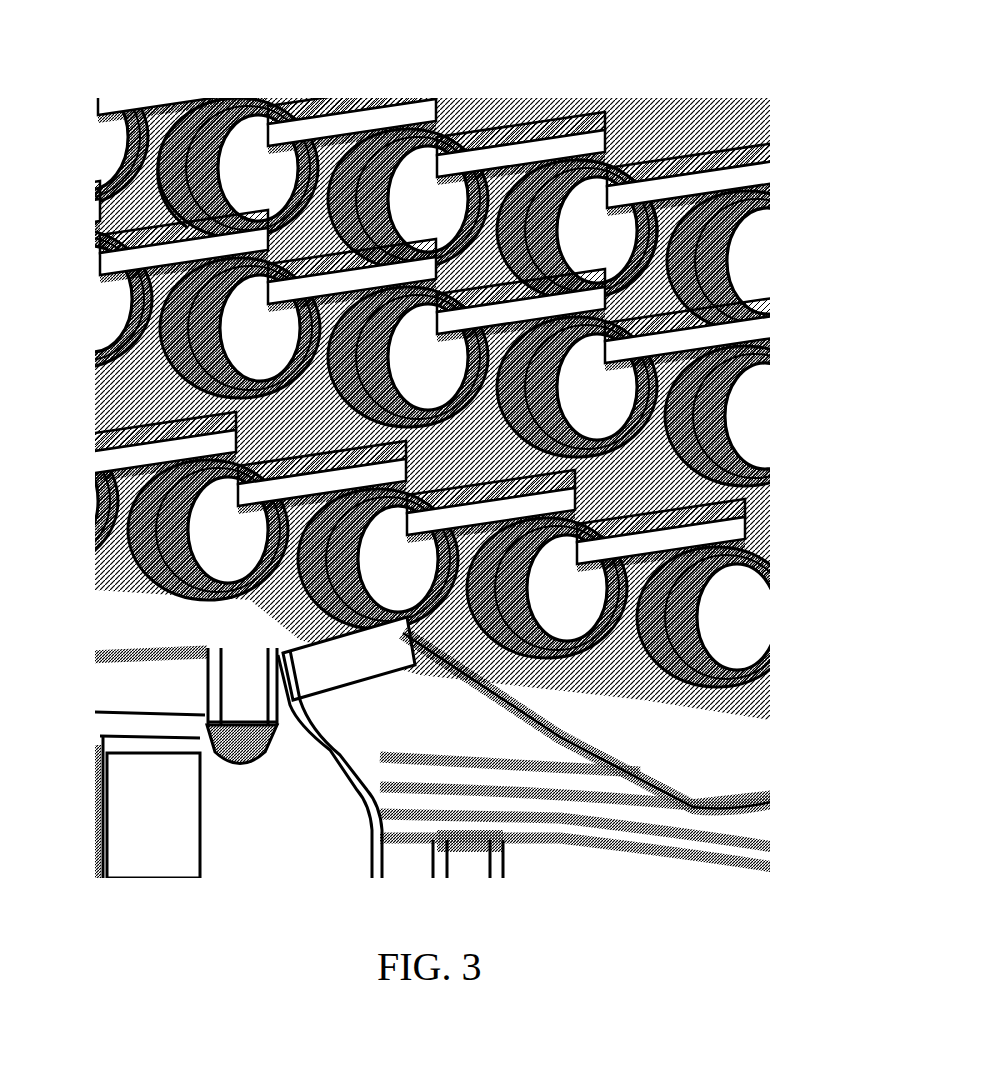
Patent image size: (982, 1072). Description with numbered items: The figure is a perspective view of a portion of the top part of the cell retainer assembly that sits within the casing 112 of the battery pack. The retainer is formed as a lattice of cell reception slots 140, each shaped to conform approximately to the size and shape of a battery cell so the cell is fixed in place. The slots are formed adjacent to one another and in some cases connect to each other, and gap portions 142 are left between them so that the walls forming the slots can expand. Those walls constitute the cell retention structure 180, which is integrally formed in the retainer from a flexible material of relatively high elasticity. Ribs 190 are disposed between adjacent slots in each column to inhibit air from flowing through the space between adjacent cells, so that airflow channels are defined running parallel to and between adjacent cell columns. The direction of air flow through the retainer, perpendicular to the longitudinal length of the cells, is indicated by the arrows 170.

The casing 112 is at (347, 763).
The cell reception slot 140 is at (243, 135).
The gap portion 142 is at (140, 205).
The arrows 170 is at (420, 130).
The cell retention structure 180 is at (685, 280).
The rib 190 is at (555, 135).